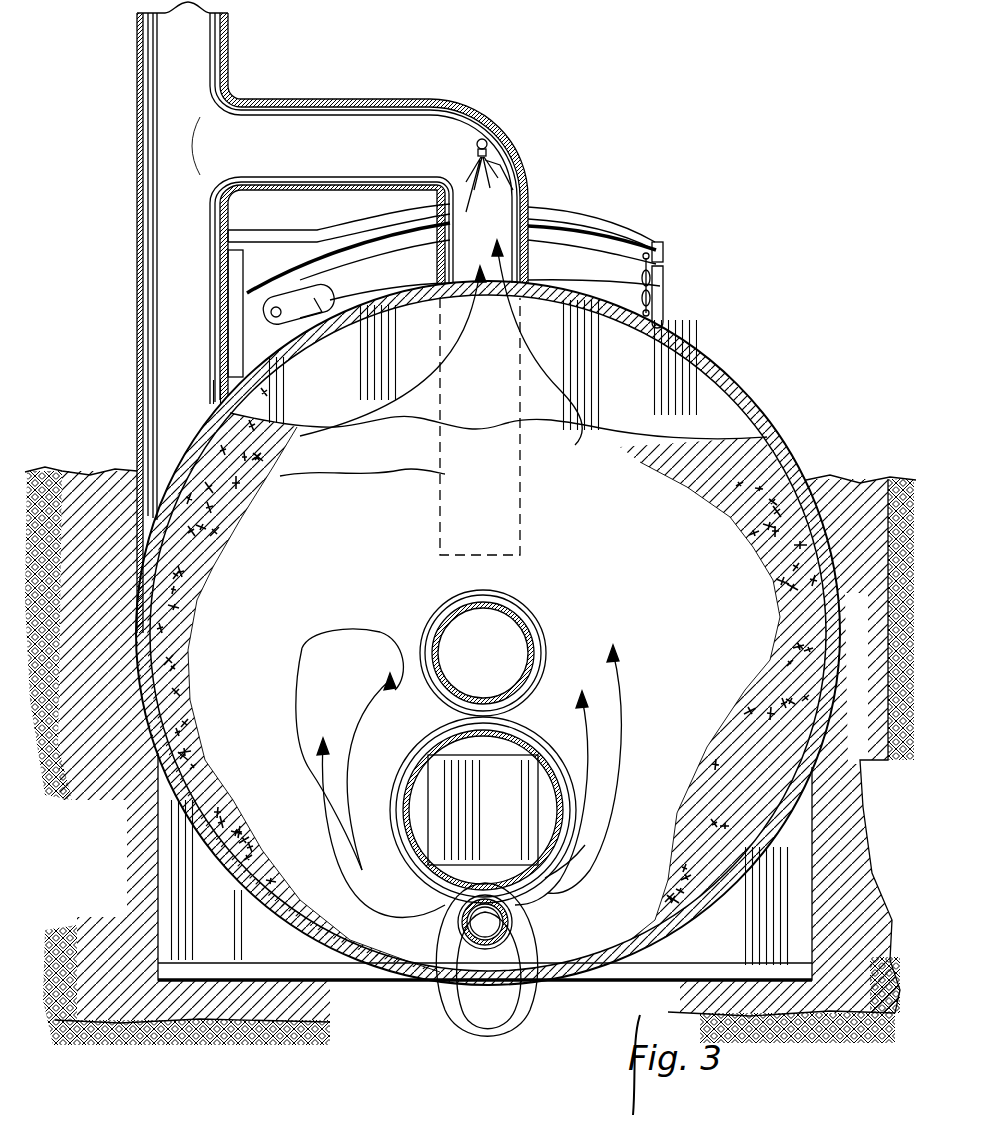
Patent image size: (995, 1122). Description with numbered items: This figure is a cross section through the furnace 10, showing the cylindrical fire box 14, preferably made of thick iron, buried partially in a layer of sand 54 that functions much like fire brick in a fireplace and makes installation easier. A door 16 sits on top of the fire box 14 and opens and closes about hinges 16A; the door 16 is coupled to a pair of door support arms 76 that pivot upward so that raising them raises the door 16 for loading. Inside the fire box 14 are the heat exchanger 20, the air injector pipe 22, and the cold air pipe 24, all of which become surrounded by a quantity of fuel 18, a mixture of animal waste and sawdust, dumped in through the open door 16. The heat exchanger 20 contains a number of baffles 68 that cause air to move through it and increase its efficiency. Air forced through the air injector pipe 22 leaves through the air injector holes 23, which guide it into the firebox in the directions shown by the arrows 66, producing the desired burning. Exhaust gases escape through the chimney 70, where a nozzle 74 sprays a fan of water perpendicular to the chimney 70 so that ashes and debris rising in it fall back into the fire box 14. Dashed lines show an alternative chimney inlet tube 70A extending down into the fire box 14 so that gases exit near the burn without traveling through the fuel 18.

The furnace 10 is at (697, 310).
The fire box 14 is at (699, 347).
The door 16 is at (586, 267).
The hinges 16A is at (290, 300).
The fuel 18 is at (710, 430).
The heat exchanger 20 is at (512, 850).
The air injector pipe 22 is at (466, 999).
The air injector holes 23 is at (452, 1020).
The cold air pipe 24 is at (428, 624).
The sand 54 is at (833, 482).
The arrows 66 is at (587, 902).
The baffles 68 is at (545, 878).
The chimney 70 is at (433, 98).
The chimney inlet tube 70A is at (440, 555).
The nozzle 74 is at (481, 140).
The door support arms 76 is at (600, 223).